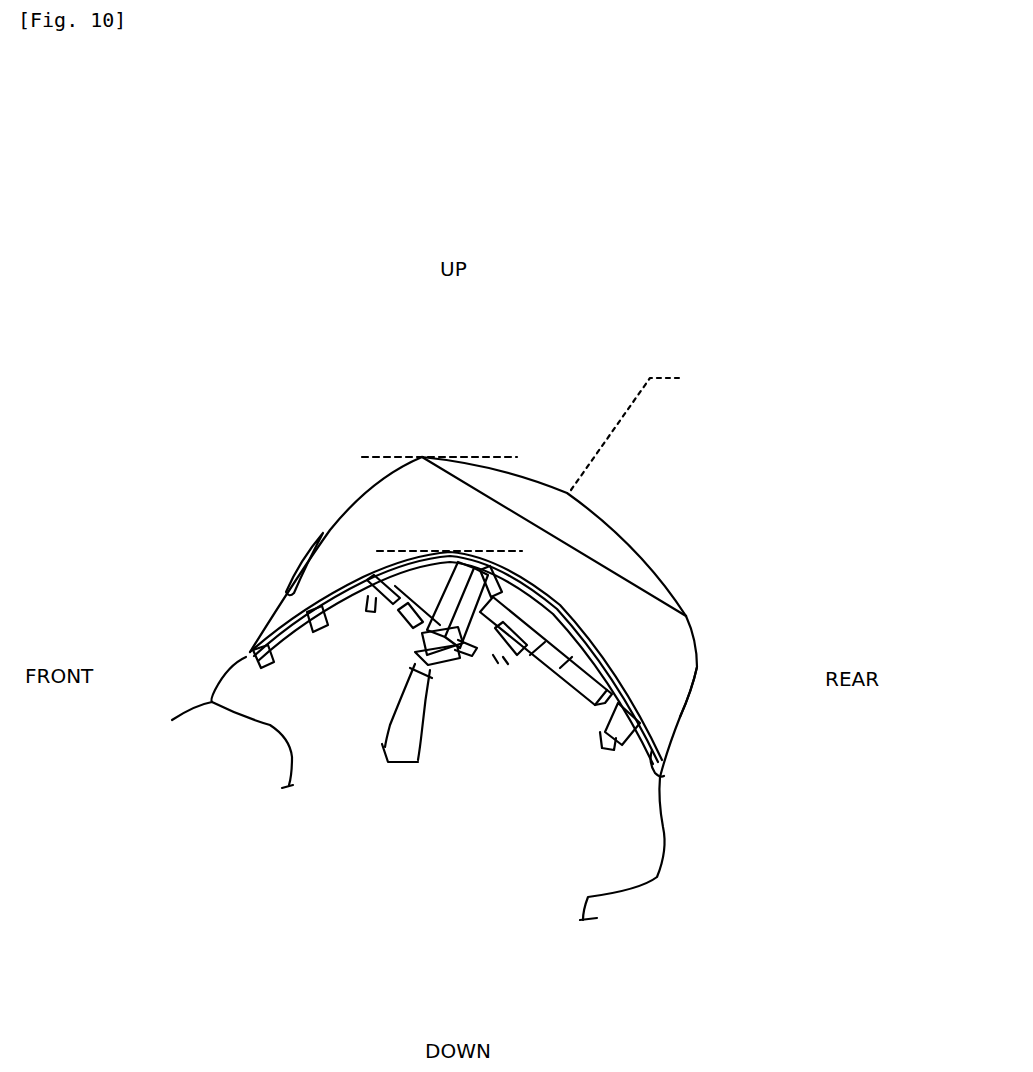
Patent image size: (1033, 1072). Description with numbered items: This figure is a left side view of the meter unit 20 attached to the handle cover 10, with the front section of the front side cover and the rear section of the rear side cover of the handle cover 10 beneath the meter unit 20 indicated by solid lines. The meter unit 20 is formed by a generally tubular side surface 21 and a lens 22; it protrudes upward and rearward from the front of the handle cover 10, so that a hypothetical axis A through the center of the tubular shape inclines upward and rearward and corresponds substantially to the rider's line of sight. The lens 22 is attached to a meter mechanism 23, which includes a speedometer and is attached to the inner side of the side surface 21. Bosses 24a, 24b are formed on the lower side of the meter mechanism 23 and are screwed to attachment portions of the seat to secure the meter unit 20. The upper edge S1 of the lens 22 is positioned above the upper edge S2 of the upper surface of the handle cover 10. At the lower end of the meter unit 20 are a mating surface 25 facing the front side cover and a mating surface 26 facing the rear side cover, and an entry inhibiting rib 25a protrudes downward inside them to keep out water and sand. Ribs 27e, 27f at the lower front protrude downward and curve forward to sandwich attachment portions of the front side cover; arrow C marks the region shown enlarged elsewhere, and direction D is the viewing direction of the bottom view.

The handle cover 10 is at (172, 720).
The meter unit 20 is at (714, 633).
The side surface 21 is at (677, 697).
The lens 22 is at (638, 563).
The meter mechanism 23 is at (500, 675).
The boss 24a is at (443, 623).
The boss 24b is at (612, 728).
The mating surface 25 is at (300, 610).
The entry inhibiting rib 25a is at (292, 633).
The mating surface 26 is at (664, 776).
The rib 27e is at (324, 632).
The rib 27f is at (260, 668).
The upper edge of lens S1 is at (445, 452).
The upper edge of upper surface S2 is at (432, 547).
The axis A is at (641, 434).
The arrow C is at (242, 649).
The direction D is at (342, 862).